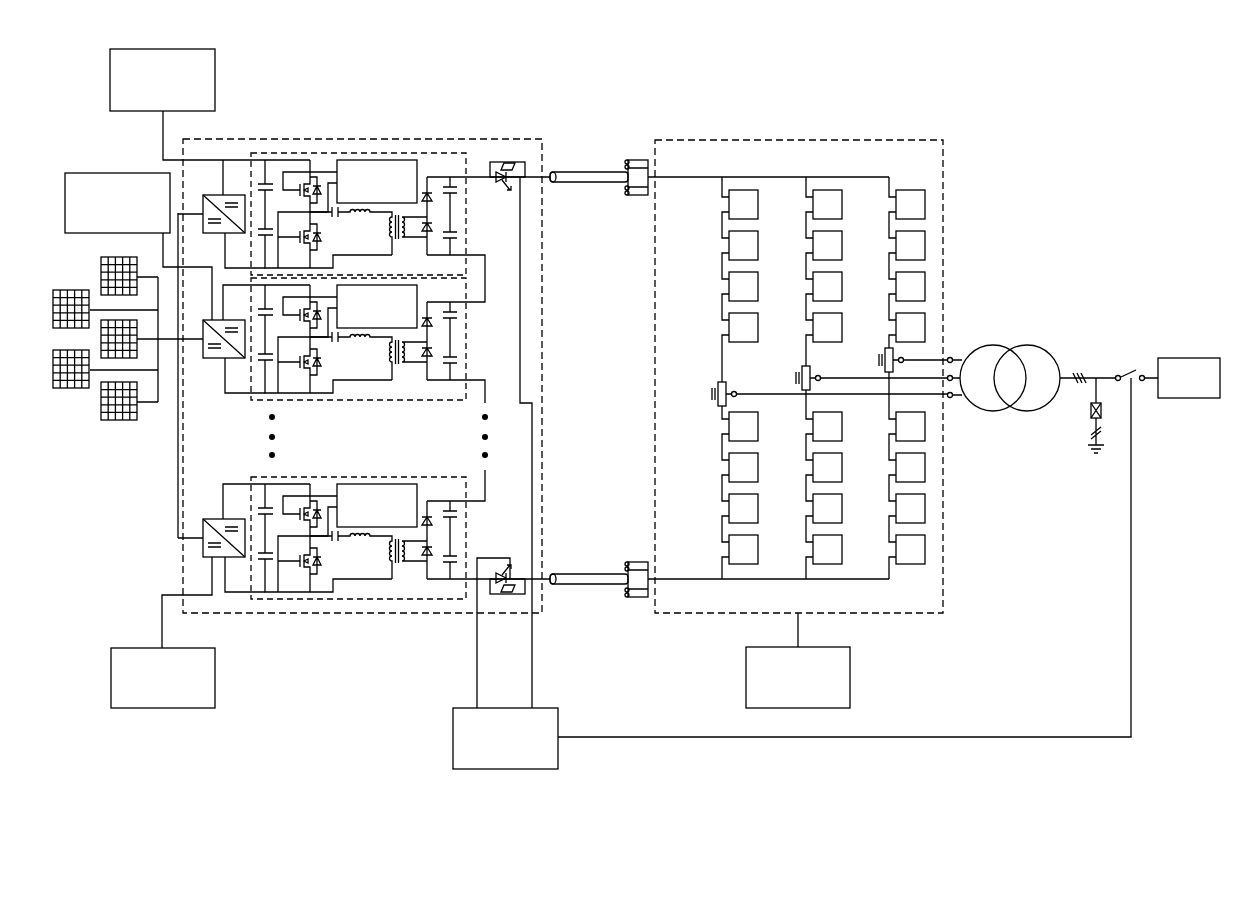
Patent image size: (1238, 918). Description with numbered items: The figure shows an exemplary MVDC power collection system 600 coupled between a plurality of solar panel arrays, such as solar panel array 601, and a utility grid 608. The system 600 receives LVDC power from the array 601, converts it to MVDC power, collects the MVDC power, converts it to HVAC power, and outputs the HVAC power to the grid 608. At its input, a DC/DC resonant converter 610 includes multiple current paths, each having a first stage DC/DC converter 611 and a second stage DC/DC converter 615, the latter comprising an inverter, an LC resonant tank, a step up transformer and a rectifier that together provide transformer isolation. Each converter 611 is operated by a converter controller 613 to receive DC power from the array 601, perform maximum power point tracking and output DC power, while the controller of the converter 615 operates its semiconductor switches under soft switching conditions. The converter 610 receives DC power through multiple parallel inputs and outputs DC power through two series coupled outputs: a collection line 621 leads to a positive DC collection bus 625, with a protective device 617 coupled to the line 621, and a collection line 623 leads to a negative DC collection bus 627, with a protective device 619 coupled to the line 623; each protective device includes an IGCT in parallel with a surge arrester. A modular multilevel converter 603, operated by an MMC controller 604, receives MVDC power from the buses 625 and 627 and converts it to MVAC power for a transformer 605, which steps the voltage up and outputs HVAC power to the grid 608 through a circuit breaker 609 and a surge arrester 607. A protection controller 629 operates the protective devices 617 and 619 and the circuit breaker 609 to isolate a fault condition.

The MVDC power collection system 600 is at (393, 768).
The solar panel array 601 is at (116, 474).
The modular multilevel converter 603 is at (806, 140).
The MMC controller 604 is at (798, 677).
The transformer 605 is at (1014, 346).
The surge arrester 607 is at (1090, 410).
The utility grid 608 is at (1192, 358).
The circuit breaker 609 is at (1130, 372).
The DC/DC resonant converter 610 is at (430, 139).
The first stage DC/DC converter 611 is at (203, 222).
The converter controller 613 is at (241, 378).
The second stage DC/DC converter 615 is at (466, 219).
The protective device 617 is at (498, 162).
The protective device 619 is at (493, 594).
The collection line 621 is at (577, 172).
The collection line 623 is at (577, 573).
The positive DC collection bus 625 is at (630, 160).
The negative DC collection bus 627 is at (640, 597).
The protection controller 629 is at (505, 738).